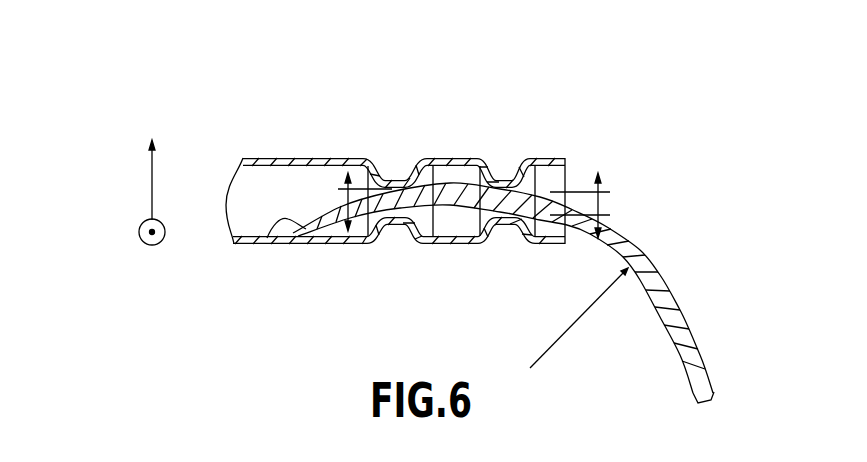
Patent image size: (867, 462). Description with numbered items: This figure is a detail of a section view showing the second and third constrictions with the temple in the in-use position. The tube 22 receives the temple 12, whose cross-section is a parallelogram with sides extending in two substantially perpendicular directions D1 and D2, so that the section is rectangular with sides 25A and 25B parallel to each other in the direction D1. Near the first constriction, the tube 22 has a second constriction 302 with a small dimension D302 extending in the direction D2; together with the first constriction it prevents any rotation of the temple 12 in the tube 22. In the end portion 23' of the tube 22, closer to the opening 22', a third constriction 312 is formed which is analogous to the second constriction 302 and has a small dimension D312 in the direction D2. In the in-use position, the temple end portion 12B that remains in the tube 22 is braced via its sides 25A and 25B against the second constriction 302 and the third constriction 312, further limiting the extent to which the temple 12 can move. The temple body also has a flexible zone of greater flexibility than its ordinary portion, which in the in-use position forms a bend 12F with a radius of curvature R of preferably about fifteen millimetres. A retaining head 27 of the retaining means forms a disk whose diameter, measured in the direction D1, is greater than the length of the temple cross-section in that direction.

The tube 22 is at (395, 166).
The temple end portion 12B is at (402, 152).
The side 25A is at (449, 150).
The end portion 23' is at (501, 150).
The opening 22' is at (565, 169).
The second constriction 302 is at (400, 246).
The side 25B is at (458, 238).
The third constriction 312 is at (510, 232).
The retaining head 27 is at (264, 239).
The bend 12F is at (621, 237).
The temple 12 is at (708, 314).
The radius of curvature R is at (577, 321).
The small dimension of the second constriction D302 is at (347, 200).
The small dimension of the third constriction D312 is at (600, 204).
The direction D2 is at (166, 180).
The direction D1 is at (152, 236).